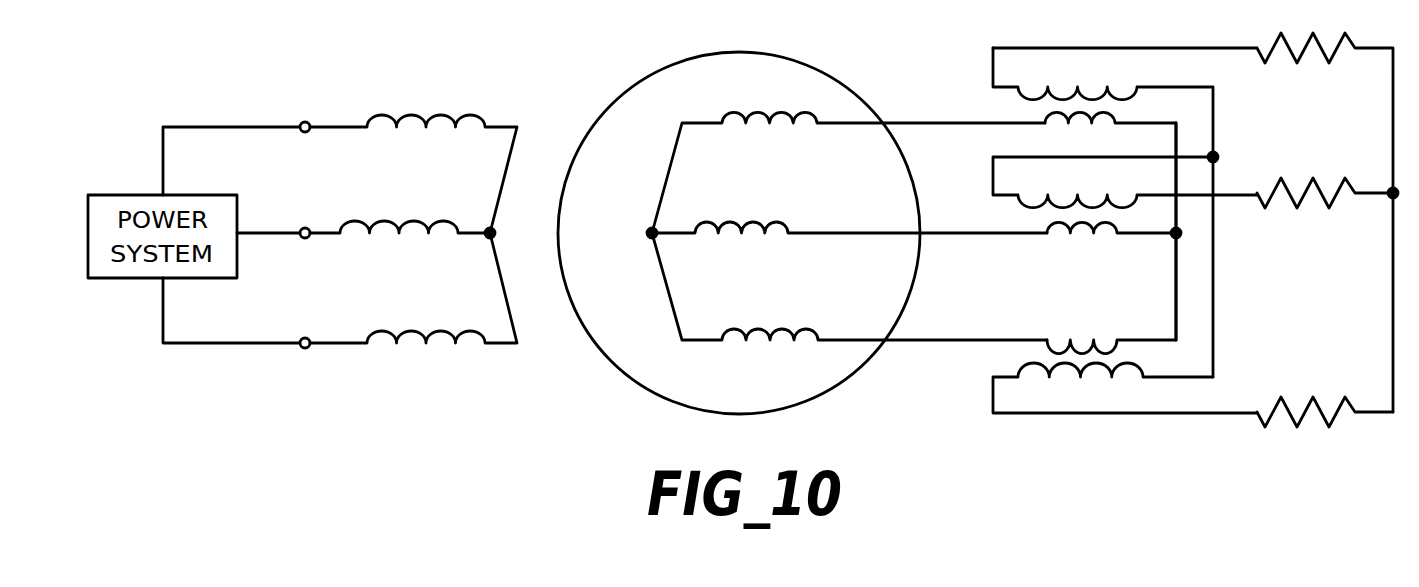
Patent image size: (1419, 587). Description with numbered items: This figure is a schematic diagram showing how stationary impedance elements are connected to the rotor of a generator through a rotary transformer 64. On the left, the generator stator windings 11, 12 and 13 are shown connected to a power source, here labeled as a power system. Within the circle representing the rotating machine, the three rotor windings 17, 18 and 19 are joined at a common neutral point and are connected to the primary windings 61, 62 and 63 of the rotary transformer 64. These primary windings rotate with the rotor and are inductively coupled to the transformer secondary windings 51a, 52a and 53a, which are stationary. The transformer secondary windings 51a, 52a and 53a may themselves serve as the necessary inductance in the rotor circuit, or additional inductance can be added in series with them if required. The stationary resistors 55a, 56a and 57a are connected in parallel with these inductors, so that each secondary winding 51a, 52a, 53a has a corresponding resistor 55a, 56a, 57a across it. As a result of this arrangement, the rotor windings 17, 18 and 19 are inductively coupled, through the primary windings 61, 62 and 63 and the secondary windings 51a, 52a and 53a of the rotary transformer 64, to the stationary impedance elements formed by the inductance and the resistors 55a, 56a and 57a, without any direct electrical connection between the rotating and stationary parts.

The generator stator winding 11 is at (427, 120).
The generator stator winding 12 is at (421, 228).
The generator stator winding 13 is at (428, 340).
The rotor winding 17 is at (782, 116).
The rotor winding 18 is at (778, 228).
The rotor winding 19 is at (782, 335).
The transformer secondary winding 51a is at (1132, 93).
The transformer secondary winding 52a is at (1132, 203).
The transformer secondary winding 53a is at (1133, 365).
The stationary resistor 55a is at (1308, 50).
The stationary resistor 56a is at (1308, 210).
The stationary resistor 57a is at (1298, 400).
The primary winding 61 is at (1063, 118).
The primary winding 62 is at (1056, 226).
The primary winding 63 is at (1058, 352).
The rotary transformer 64 is at (1006, 268).